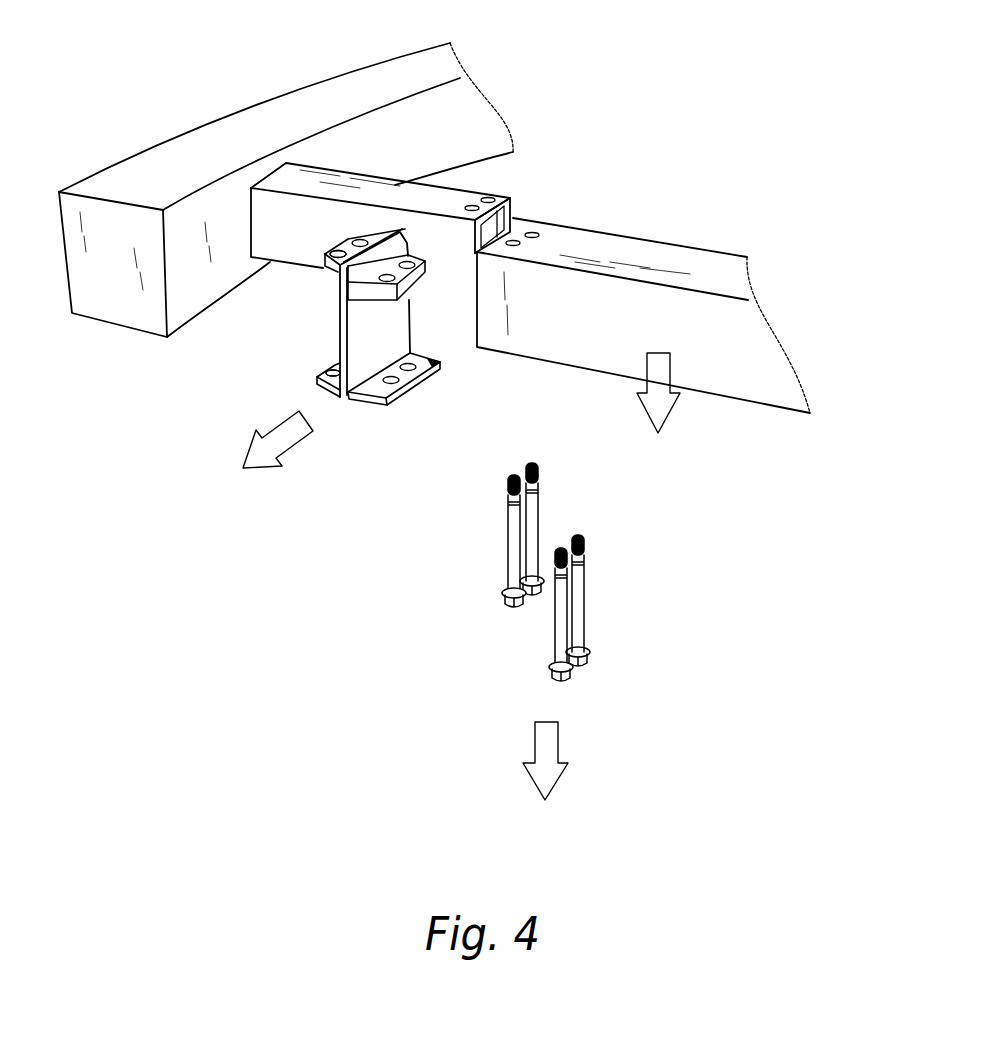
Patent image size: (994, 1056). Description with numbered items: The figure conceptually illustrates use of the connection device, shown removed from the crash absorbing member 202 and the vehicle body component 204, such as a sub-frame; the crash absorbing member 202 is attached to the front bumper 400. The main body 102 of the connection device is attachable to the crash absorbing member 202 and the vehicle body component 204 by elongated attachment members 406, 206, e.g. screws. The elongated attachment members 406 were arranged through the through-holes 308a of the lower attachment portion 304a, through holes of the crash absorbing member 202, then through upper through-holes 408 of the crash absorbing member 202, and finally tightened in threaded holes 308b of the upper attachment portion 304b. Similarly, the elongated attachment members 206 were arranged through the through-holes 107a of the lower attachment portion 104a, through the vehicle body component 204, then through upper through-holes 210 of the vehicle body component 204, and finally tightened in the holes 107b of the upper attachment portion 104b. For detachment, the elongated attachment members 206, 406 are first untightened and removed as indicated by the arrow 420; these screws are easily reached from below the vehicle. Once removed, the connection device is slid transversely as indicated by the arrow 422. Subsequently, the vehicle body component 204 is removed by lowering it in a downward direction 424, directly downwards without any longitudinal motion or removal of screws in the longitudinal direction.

The front bumper 400 is at (257, 127).
The crash absorbing member 202 is at (315, 237).
The vehicle body component 204 is at (644, 329).
The main body 102 is at (402, 343).
The upper through-holes 408 is at (470, 194).
The upper through-holes 210 is at (517, 226).
The upper attachment portion 304b is at (339, 251).
The threaded holes 308b is at (336, 250).
The through-holes 107b is at (387, 274).
The upper attachment portion 104b is at (413, 283).
The lower attachment portion 104a is at (440, 362).
The through-holes 107a is at (410, 368).
The lower attachment portion 304a is at (331, 372).
The through-holes 308a is at (334, 368).
The elongated attachment members 406 is at (562, 508).
The elongated attachment members 206 is at (612, 607).
The arrow 422 is at (280, 440).
The downward direction 424 is at (660, 380).
The arrow 420 is at (545, 748).